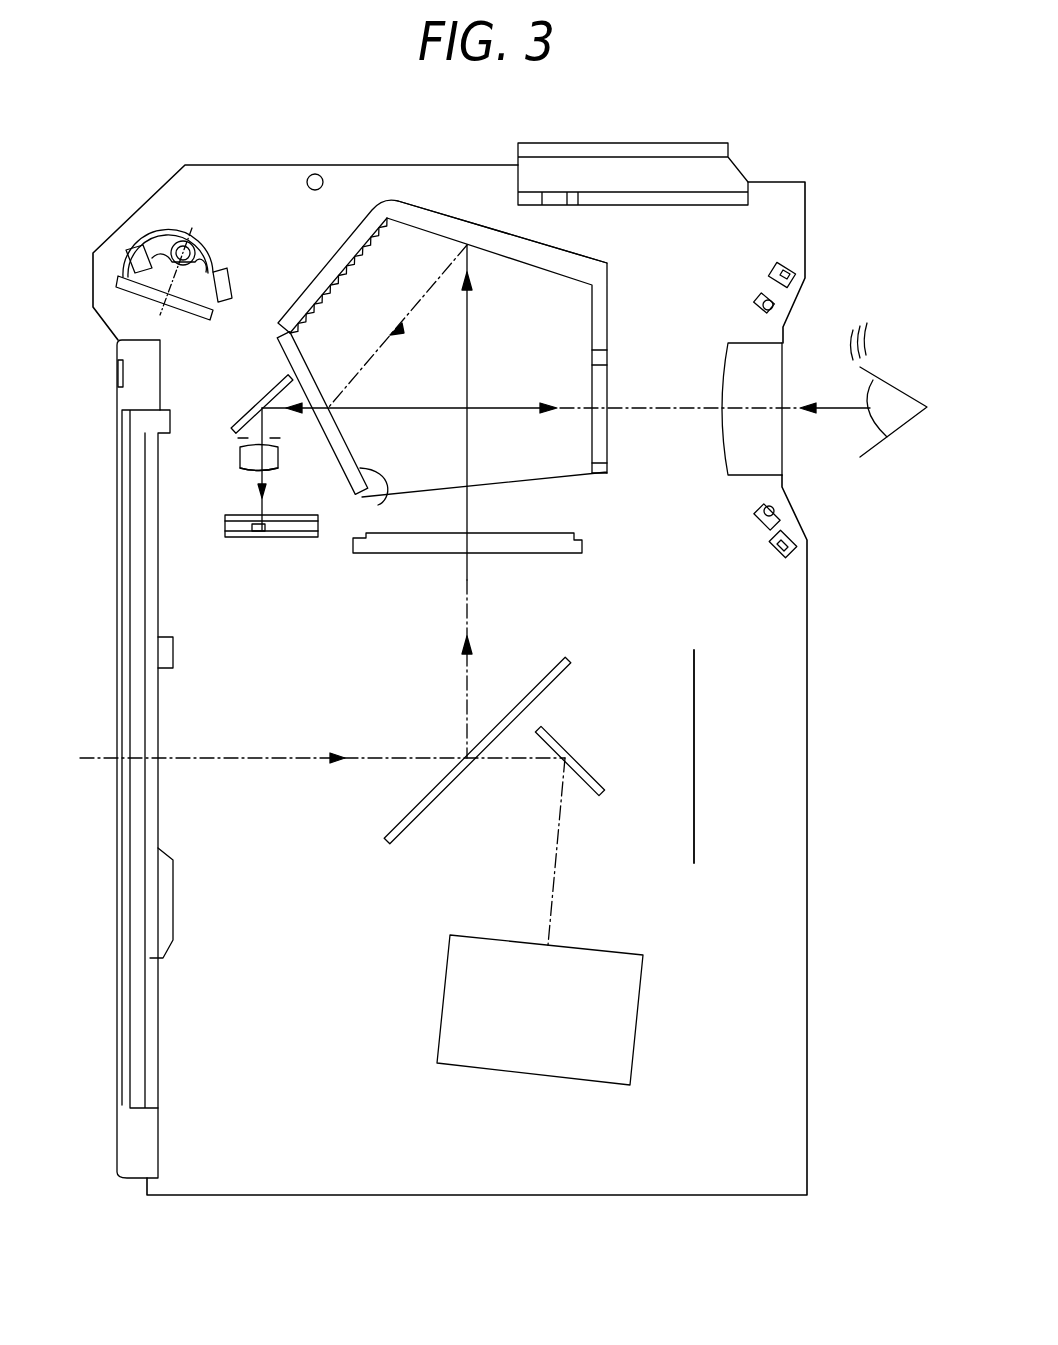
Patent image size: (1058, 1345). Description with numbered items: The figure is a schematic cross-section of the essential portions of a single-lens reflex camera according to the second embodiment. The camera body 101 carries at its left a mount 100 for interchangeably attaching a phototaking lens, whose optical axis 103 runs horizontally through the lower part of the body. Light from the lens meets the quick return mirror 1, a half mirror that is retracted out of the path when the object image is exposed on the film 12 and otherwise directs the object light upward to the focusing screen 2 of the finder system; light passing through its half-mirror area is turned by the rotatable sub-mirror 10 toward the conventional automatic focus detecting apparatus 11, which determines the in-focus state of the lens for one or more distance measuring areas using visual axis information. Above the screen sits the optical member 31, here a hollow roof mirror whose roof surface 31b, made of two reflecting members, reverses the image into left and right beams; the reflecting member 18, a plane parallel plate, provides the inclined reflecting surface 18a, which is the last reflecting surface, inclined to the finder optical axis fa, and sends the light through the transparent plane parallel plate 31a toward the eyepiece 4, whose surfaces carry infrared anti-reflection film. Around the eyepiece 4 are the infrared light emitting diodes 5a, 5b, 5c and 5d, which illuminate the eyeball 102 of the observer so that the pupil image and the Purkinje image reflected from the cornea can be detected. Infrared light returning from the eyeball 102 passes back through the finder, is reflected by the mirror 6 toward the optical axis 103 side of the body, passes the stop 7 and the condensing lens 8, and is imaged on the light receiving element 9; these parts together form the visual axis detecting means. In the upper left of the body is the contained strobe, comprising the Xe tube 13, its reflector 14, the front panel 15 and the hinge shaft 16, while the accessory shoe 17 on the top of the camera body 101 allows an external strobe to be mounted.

The quick return mirror 1 is at (574, 667).
The focusing screen 2 is at (583, 547).
The eyepiece 4 is at (783, 452).
The light emitting diode 5a is at (800, 563).
The light emitting diode 5b is at (795, 513).
The light emitting diode 5c is at (790, 310).
The light emitting diode 5d is at (800, 270).
The mirror 6 is at (232, 422).
The stop 7 is at (240, 445).
The condensing lens 8 is at (245, 473).
The light receiving element 9 is at (262, 541).
The sub-mirror 10 is at (606, 772).
The automatic focus detecting apparatus 11 is at (615, 957).
The film 12 is at (696, 788).
The Xe tube 13 is at (192, 232).
The reflector 14 is at (200, 250).
The front panel 15 is at (222, 294).
The hinge shaft 16 is at (318, 172).
The accessory shoe 17 is at (645, 144).
The reflecting member 18 is at (346, 479).
The inclined reflecting surface 18a is at (378, 505).
The optical member 31 is at (408, 196).
The plane parallel plate 31a is at (598, 391).
The roof mirror 31b is at (525, 262).
The mount 100 is at (117, 456).
The camera body 101 is at (247, 147).
The eyeball 102 is at (890, 366).
The optical axis 103 is at (217, 768).
The finder optical axis fa is at (673, 412).